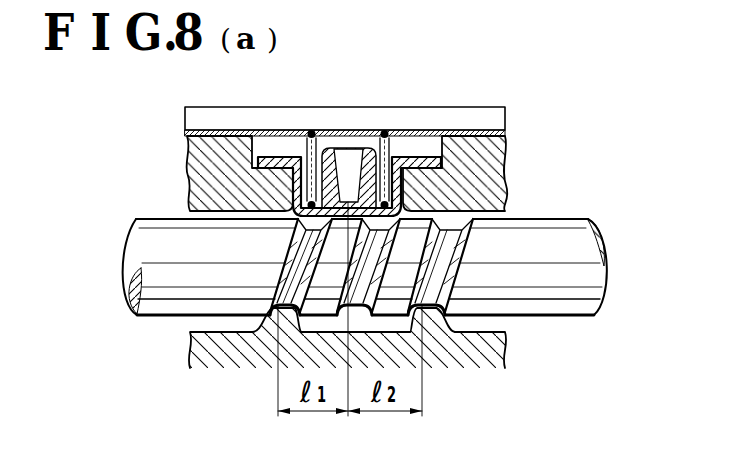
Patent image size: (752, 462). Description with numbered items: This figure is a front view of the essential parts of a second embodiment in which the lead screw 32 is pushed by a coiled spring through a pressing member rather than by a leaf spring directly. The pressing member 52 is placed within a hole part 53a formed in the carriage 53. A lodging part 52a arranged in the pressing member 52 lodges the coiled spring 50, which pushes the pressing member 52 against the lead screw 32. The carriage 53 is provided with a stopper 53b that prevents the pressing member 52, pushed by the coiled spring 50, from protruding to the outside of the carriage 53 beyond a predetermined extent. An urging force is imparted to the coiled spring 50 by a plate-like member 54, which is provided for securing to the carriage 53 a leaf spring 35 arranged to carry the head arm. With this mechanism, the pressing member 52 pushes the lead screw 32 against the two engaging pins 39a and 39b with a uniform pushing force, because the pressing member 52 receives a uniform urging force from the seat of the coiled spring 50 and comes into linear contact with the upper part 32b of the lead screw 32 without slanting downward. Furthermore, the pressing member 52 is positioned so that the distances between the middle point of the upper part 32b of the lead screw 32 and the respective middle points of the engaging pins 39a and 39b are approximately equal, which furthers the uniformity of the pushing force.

The lead screw 32 is at (552, 273).
The upper part of the lead screw 32b is at (250, 258).
The leaf spring 35 is at (466, 132).
The engaging pin 39a is at (270, 318).
The engaging pin 39b is at (428, 312).
The coiled spring 50 is at (384, 131).
The pressing member 52 is at (270, 162).
The lodging part 52a is at (302, 158).
The carriage 53 is at (503, 160).
The hole part 53a is at (414, 145).
The stopper 53b is at (420, 195).
The plate-like member 54 is at (212, 117).